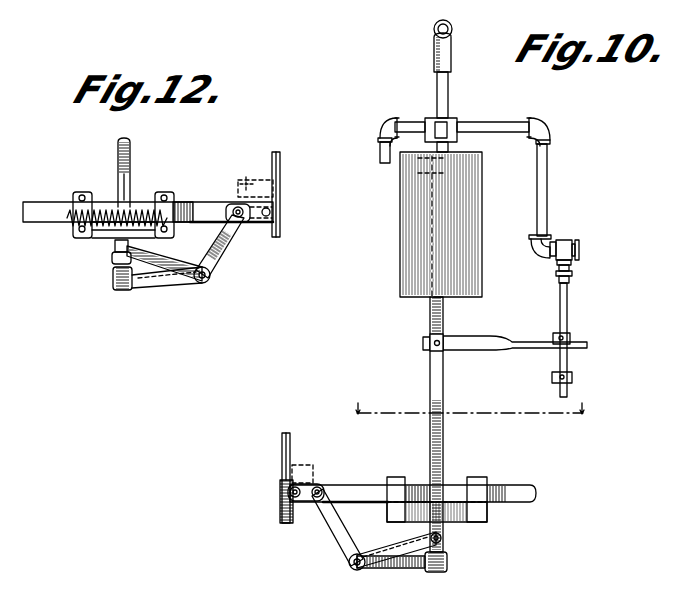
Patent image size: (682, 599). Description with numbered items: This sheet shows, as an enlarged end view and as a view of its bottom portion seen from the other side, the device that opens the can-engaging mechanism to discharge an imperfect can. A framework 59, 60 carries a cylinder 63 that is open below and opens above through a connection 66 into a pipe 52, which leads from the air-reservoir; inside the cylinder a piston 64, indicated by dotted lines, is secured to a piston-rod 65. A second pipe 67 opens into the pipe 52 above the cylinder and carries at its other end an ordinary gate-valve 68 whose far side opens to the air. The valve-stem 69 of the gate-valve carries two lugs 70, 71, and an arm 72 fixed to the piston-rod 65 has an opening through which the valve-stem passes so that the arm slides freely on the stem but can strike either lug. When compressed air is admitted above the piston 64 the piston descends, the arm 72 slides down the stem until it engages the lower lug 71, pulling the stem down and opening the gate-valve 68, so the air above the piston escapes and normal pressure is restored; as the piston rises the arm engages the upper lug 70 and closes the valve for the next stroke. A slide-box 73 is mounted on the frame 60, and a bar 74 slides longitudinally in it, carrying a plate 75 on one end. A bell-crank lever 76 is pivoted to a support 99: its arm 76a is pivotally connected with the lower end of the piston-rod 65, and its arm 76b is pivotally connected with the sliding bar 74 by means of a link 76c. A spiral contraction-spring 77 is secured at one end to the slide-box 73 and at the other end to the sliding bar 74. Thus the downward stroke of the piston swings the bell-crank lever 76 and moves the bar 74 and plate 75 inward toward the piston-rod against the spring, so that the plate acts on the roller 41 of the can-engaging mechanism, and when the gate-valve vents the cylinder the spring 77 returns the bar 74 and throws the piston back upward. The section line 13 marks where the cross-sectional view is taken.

In FIG. 10, the section line 13 is at (473, 413).
In FIG. 12, the roller 41 is at (252, 179).
In FIG. 10, the roller 41 is at (292, 473).
In FIG. 10, the pipe 52 is at (378, 148).
In FIG. 10, the framework 59 is at (452, 30).
In FIG. 10, the framework 60 is at (449, 96).
In FIG. 10, the cylinder 63 is at (400, 223).
In FIG. 10, the piston 64 is at (408, 168).
In FIG. 10, the piston-rod 65 is at (437, 389).
In FIG. 10, the connection 66 is at (449, 119).
In FIG. 10, the pipe 67 is at (548, 173).
In FIG. 10, the gate-valve 68 is at (564, 245).
In FIG. 10, the valve-stem 69 is at (570, 298).
In FIG. 10, the lug 70 is at (571, 338).
In FIG. 10, the lug 71 is at (573, 377).
In FIG. 10, the arm 72 is at (484, 343).
In FIG. 12, the slide-box 73 is at (107, 231).
In FIG. 10, the slide-box 73 is at (478, 511).
In FIG. 12, the sliding bar 74 is at (191, 208).
In FIG. 10, the sliding bar 74 is at (358, 497).
In FIG. 12, the plate 75 is at (281, 163).
In FIG. 10, the plate 75 is at (282, 442).
In FIG. 12, the bell-crank lever 76 is at (160, 272).
In FIG. 10, the bell-crank lever 76 is at (378, 568).
In FIG. 12, the arm of bell-crank lever 76a is at (145, 256).
In FIG. 10, the arm of bell-crank lever 76a is at (404, 548).
In FIG. 12, the arm of bell-crank lever 76b is at (219, 247).
In FIG. 10, the arm of bell-crank lever 76b is at (338, 526).
In FIG. 12, the link 76c is at (281, 203).
In FIG. 10, the link 76c is at (310, 488).
In FIG. 12, the spiral contraction-spring 77 is at (131, 216).
In FIG. 12, the support 99 is at (174, 283).
In FIG. 10, the support 99 is at (418, 569).